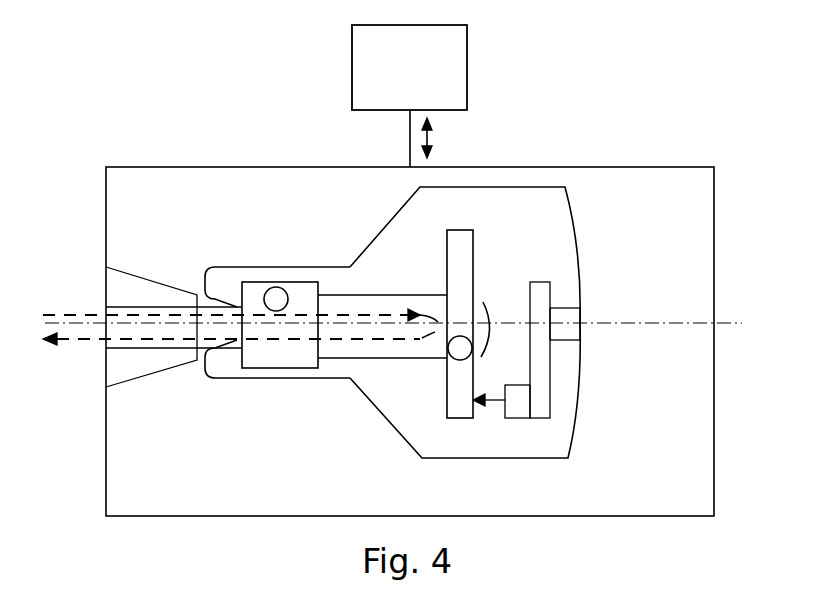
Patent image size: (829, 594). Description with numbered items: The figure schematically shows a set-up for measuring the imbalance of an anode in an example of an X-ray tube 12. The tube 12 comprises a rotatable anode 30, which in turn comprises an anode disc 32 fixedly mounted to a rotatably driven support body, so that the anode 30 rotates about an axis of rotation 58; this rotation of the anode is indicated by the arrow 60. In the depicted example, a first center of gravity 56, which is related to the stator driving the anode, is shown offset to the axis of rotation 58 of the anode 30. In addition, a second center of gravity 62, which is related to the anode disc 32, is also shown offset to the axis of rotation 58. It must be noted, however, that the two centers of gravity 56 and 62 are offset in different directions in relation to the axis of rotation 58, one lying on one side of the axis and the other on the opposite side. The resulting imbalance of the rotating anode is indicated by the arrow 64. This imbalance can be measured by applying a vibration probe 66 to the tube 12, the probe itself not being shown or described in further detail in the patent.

The X-ray tube 12 is at (676, 160).
The rotatable anode 30 is at (413, 260).
The anode disc 32 is at (473, 245).
The first center of gravity 56 is at (274, 290).
The axis of rotation 58 is at (727, 323).
The arrow 60 is at (484, 310).
The second center of gravity 62 is at (452, 358).
The arrow 64 is at (432, 134).
The vibration probe 66 is at (467, 48).